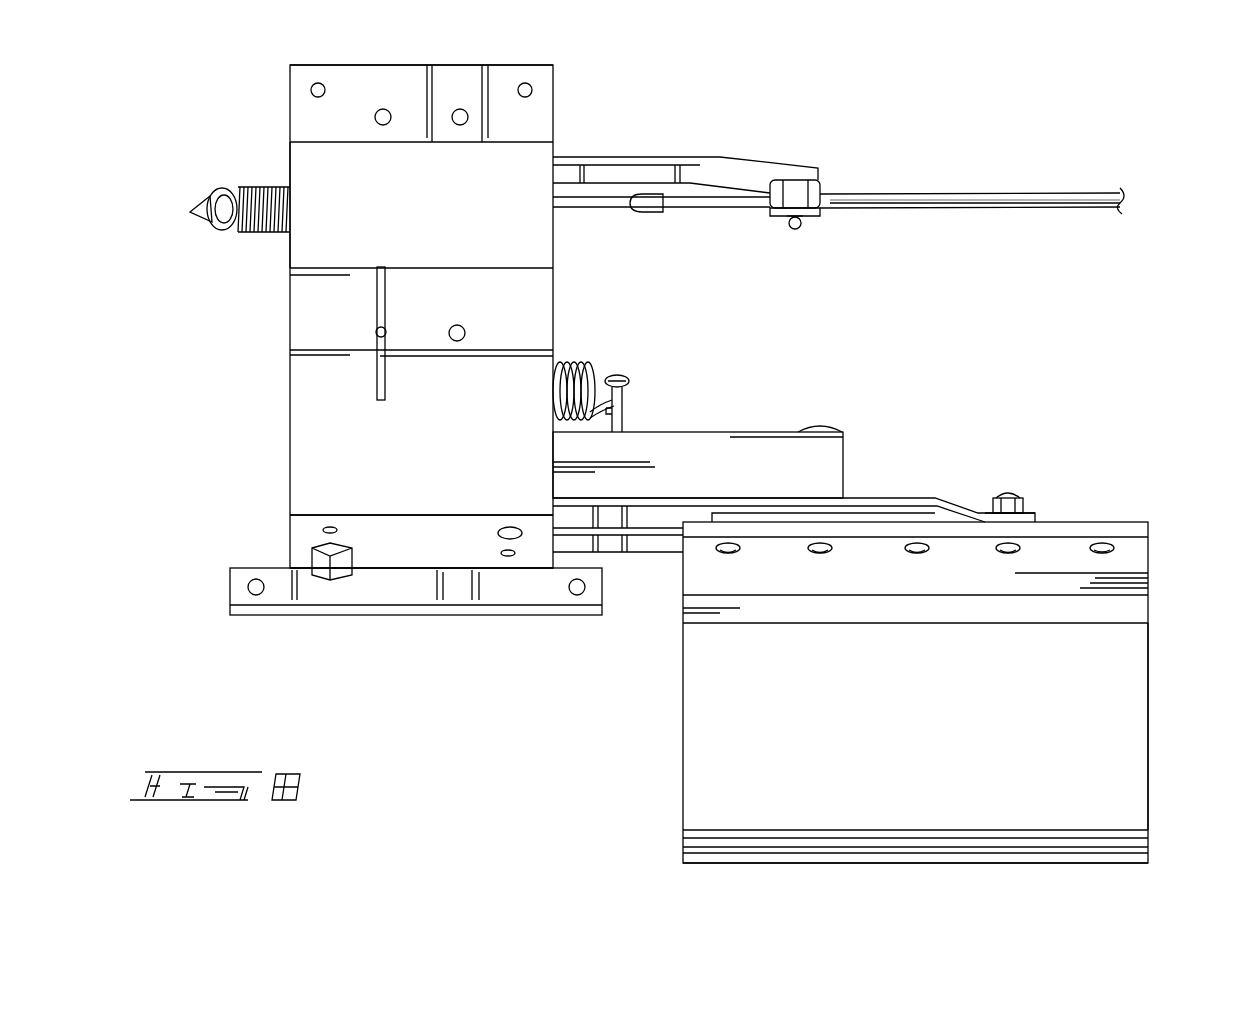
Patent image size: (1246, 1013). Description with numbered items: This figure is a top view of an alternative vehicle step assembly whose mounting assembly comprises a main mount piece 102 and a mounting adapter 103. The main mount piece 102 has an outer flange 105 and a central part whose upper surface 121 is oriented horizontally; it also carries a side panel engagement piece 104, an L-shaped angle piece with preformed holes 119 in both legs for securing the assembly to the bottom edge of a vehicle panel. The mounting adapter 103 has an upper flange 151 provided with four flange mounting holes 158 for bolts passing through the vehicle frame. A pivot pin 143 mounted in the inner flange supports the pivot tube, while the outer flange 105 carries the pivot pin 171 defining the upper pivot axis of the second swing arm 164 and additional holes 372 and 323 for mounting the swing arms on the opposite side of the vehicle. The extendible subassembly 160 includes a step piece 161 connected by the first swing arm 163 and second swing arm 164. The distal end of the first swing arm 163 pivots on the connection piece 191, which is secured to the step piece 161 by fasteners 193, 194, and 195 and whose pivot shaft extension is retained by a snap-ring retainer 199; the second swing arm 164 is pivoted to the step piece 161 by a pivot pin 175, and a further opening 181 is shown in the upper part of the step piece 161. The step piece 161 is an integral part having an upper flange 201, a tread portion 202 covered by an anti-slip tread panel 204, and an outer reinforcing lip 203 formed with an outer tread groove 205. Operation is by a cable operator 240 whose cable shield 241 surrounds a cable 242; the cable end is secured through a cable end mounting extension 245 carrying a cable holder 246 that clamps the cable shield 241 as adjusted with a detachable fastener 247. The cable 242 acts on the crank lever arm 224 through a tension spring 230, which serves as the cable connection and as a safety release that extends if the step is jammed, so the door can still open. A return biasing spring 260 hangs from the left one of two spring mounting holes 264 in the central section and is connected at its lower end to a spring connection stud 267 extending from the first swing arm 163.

The main mount piece 102 is at (553, 295).
The mounting adapter 103 is at (282, 122).
The side panel engagement piece 104 is at (240, 590).
The outer flange 105 is at (266, 515).
The preformed holes 119 is at (258, 595).
The upper surface 121 is at (320, 463).
The pivot pin 143 is at (342, 553).
The upper flange 151 is at (336, 64).
The flange mounting holes 158 is at (311, 90).
The extendible subassembly 160 is at (1148, 492).
The step piece 161 is at (1150, 666).
The first swing arm 163 is at (765, 470).
The second swing arm 164 is at (678, 495).
The pivot pin 171 is at (511, 527).
The pivot pin 175 is at (1008, 494).
The hole 181 is at (1116, 548).
The first swing arm distal pivot connection piece 191 is at (879, 520).
The fastener 193 is at (904, 553).
The fastener 194 is at (832, 553).
The fastener 195 is at (718, 551).
The snap-ring retainer 199 is at (816, 430).
The upper flange 201 is at (1056, 555).
The tread portion 202 is at (1150, 796).
The outer reinforcing lip 203 is at (1158, 830).
The anti-slip tread panel 204 is at (1110, 720).
The outer tread groove 205 is at (845, 864).
The crank lever arm 224 is at (190, 208).
The tension spring 230 is at (252, 236).
The cable operator 240 is at (1068, 208).
The cable shield 241 is at (990, 209).
The cable 242 is at (596, 208).
The cable end mounting extension 245 is at (657, 158).
The cable holder 246 is at (796, 185).
The detachable fastener 247 is at (793, 229).
The return biasing spring 260 is at (590, 362).
The spring mounting holes 264 is at (388, 330).
The spring connection stud 267 is at (630, 376).
The additional hole 323 is at (509, 557).
The additional hole 372 is at (330, 526).